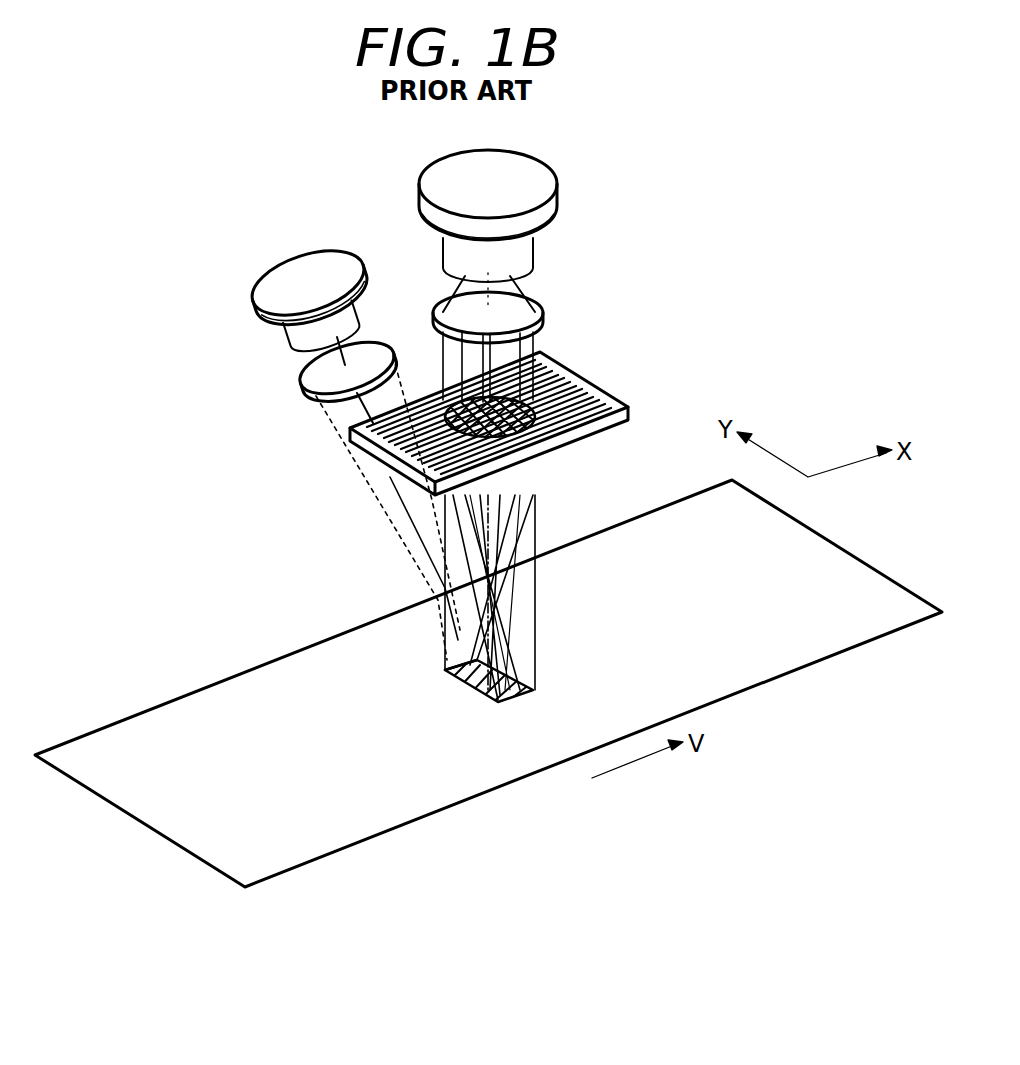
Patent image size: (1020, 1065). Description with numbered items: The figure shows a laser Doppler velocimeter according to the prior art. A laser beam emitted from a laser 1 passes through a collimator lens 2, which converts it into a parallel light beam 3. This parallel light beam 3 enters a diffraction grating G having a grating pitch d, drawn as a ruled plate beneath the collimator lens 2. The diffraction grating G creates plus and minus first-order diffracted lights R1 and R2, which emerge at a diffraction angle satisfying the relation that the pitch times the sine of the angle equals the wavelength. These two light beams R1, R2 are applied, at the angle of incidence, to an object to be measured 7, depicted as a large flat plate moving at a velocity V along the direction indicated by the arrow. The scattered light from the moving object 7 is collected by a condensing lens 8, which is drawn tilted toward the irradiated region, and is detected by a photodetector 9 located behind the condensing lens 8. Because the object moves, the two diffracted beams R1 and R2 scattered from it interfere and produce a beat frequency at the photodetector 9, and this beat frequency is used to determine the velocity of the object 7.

The laser 1 is at (553, 209).
The collimator lens 2 is at (531, 300).
The parallel light beam 3 is at (538, 345).
The diffraction grating G is at (607, 397).
The photodetector 9 is at (272, 282).
The condensing lens 8 is at (315, 387).
The substrate (moving stage) 7 is at (723, 682).
The first-order diffracted light R1 is at (530, 690).
The first-order diffracted light R2 is at (448, 672).